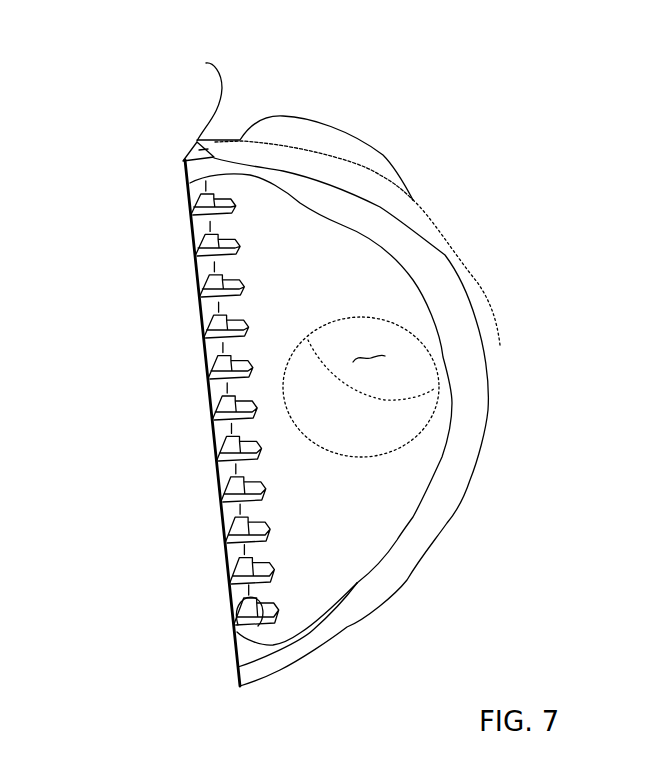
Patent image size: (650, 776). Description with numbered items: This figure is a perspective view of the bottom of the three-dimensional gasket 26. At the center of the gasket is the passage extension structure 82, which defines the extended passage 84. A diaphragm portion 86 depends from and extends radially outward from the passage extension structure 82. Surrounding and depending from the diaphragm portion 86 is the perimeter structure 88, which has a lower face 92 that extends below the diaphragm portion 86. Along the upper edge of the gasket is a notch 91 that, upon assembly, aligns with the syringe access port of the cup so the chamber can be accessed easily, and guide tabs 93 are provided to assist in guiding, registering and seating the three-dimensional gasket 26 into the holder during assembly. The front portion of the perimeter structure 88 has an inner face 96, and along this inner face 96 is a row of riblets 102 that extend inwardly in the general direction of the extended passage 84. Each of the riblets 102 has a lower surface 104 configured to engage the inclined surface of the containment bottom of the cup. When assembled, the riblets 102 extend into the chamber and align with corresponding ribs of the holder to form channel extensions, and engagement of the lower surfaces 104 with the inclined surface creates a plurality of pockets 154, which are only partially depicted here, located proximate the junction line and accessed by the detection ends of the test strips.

The three-dimensional gasket 26 is at (157, 150).
The passage extension structure 82 is at (352, 411).
The extended passage 84 is at (371, 355).
The diaphragm portion 86 is at (311, 280).
The perimeter structure 88 is at (487, 322).
The notch 91 is at (193, 98).
The lower face 92 is at (333, 196).
The guide tabs 93 is at (303, 118).
The inner face 96 is at (237, 633).
The riblets 102 is at (217, 413).
The lower surfaces 104 is at (218, 411).
The pockets 154 is at (240, 550).